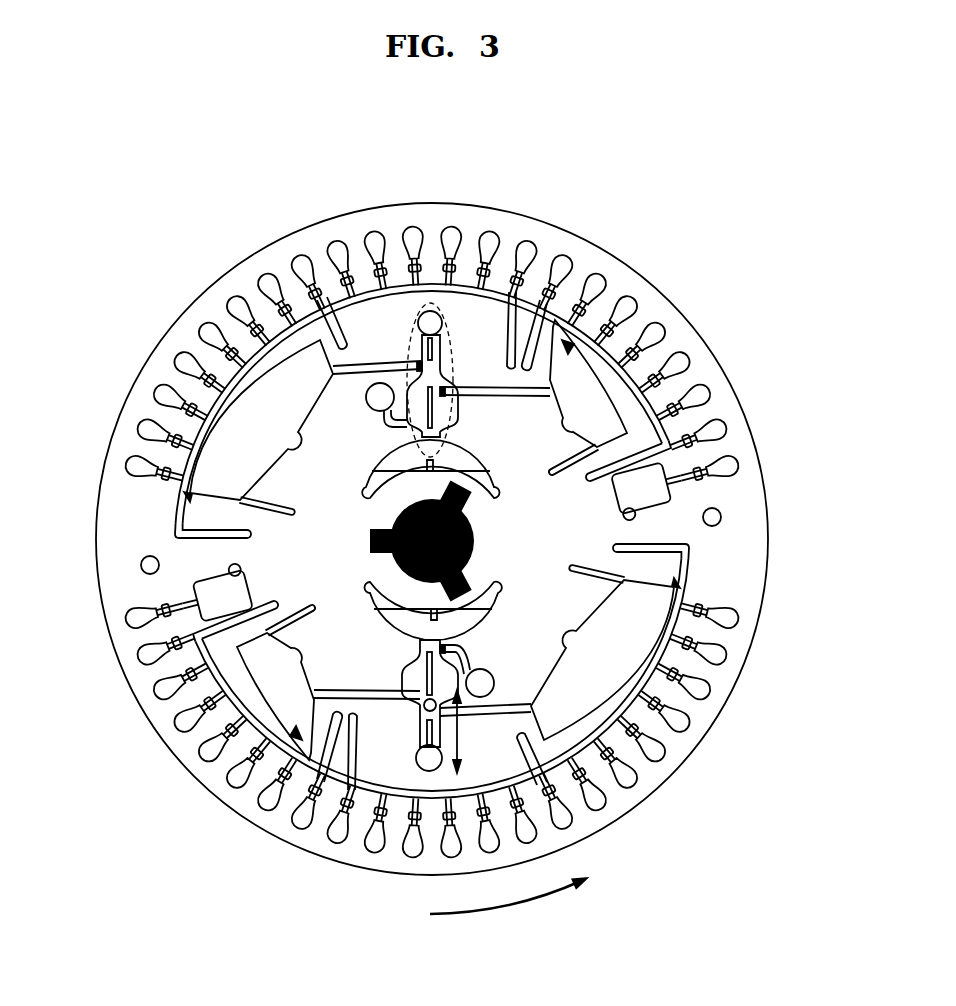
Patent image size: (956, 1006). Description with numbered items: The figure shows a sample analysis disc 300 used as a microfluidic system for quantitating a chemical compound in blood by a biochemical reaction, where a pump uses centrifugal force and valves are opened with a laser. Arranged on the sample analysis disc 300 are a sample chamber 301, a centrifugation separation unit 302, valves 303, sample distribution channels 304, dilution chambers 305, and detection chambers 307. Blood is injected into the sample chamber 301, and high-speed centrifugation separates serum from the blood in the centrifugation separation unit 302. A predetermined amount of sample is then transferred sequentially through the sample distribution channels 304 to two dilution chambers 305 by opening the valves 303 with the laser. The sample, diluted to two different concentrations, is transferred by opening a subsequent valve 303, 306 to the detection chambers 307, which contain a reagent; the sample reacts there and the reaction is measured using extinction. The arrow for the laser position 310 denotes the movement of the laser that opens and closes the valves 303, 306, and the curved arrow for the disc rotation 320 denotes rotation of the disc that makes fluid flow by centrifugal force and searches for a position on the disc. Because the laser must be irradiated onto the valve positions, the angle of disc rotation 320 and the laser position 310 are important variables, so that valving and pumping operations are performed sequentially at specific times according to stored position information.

The sample analysis disc 300 is at (650, 180).
The sample chamber 301 is at (470, 462).
The centrifugation separation unit 302 is at (455, 360).
The valve 303 is at (412, 362).
The sample distribution channel 304 is at (376, 363).
The dilution chamber 305 is at (275, 386).
The valve 306 is at (184, 497).
The detection chamber 307 is at (130, 462).
The laser position (movement of laser) 310 is at (480, 731).
The disc rotation (angle of disc rotation) 320 is at (514, 896).